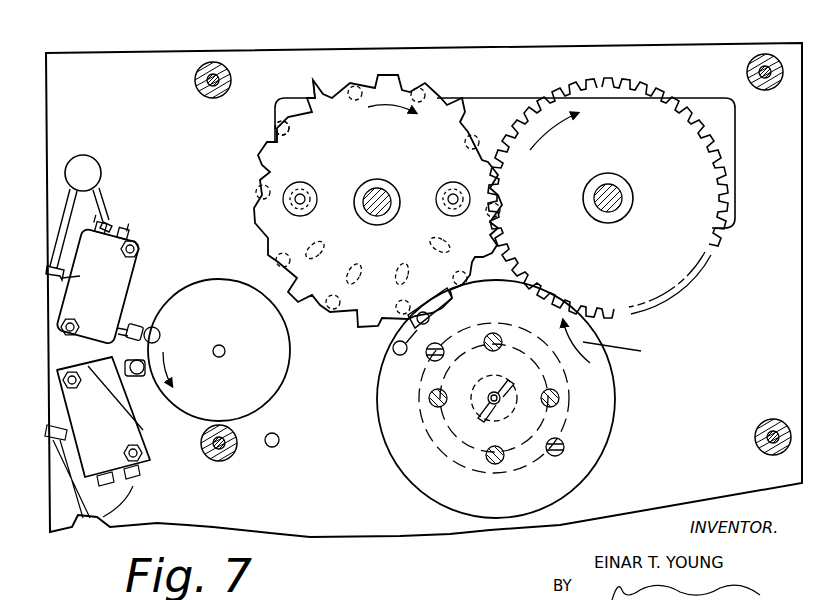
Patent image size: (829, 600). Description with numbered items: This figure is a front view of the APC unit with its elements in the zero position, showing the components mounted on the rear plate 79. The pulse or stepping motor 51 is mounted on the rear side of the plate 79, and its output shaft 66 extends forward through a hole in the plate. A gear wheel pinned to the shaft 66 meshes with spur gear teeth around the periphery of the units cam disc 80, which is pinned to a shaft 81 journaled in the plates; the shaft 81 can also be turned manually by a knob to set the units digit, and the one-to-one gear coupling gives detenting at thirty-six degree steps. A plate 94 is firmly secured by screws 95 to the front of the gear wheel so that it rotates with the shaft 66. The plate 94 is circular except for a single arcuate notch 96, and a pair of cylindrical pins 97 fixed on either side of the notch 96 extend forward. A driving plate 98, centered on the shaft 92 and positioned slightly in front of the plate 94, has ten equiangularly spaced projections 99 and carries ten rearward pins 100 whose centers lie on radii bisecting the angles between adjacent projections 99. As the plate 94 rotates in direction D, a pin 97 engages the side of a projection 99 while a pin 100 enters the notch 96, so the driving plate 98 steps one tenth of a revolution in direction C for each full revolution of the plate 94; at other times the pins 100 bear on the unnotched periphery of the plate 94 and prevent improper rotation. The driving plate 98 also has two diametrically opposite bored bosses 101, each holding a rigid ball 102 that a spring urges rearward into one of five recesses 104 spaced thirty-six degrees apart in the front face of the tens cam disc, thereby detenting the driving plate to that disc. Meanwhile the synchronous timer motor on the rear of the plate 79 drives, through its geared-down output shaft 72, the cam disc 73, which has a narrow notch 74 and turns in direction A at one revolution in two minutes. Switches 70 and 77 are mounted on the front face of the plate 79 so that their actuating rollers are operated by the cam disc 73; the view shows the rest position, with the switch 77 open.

The rear plate 79 is at (173, 130).
The driving plate 98 is at (440, 128).
The projections 99 is at (385, 75).
The cylindrical pins 100 is at (352, 100).
The shaft 92 is at (378, 190).
The bored cylindrical bosses 101 is at (314, 193).
The rigid ball 102 is at (299, 193).
The recesses 104 is at (402, 266).
The units cam disc 80 is at (697, 168).
The shaft 81 is at (622, 203).
The switch 77 is at (140, 278).
The narrow notch 74 is at (161, 338).
The cam disc 73 is at (223, 295).
The geared-down output shaft 72 is at (226, 351).
The switch 70 is at (150, 448).
The plate 94 is at (608, 443).
The pulse or stepping motor 51 is at (432, 422).
The motor output shaft 66 is at (499, 399).
The screws 95 is at (430, 358).
The arcuate notch 96 is at (408, 340).
The cylindrical pins 97 is at (420, 318).